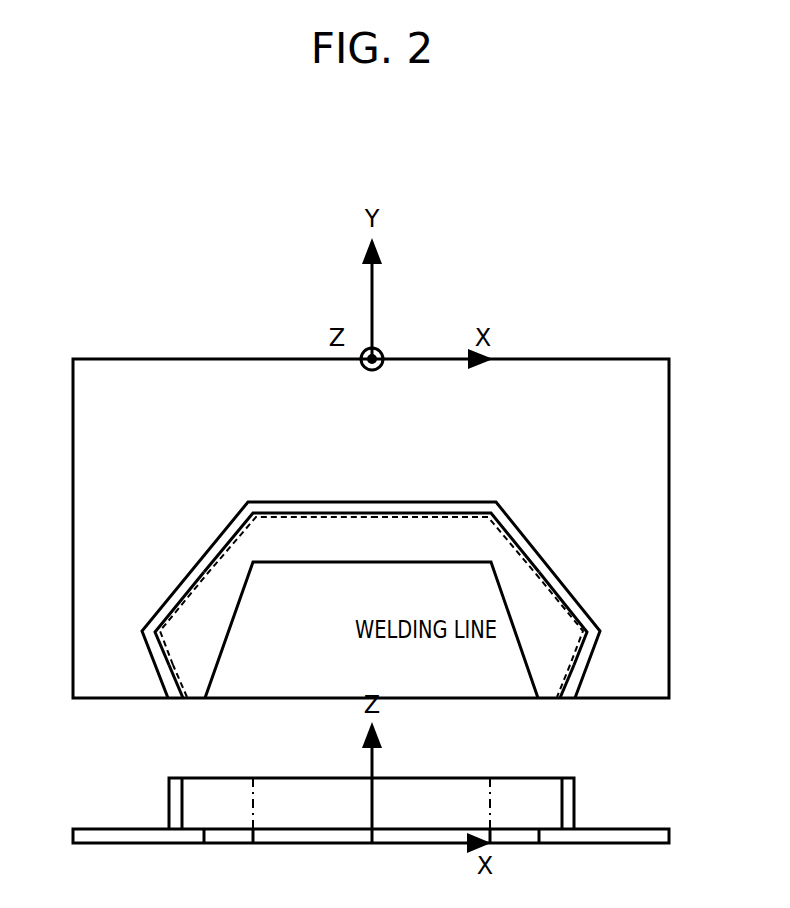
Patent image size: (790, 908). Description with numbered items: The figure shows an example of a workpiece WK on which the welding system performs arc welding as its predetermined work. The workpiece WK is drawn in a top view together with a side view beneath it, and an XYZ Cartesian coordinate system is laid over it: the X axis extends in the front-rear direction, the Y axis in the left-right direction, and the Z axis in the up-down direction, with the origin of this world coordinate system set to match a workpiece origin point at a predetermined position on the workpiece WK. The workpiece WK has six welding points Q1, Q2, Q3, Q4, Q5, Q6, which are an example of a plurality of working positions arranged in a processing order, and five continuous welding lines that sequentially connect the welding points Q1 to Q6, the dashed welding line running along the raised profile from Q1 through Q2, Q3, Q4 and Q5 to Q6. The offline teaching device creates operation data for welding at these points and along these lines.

The workpiece WK is at (600, 358).
The welding point Q1 is at (527, 688).
The welding point Q2 is at (586, 618).
The welding point Q3 is at (456, 523).
The welding point Q4 is at (285, 523).
The welding point Q5 is at (155, 618).
The welding point Q6 is at (213, 688).